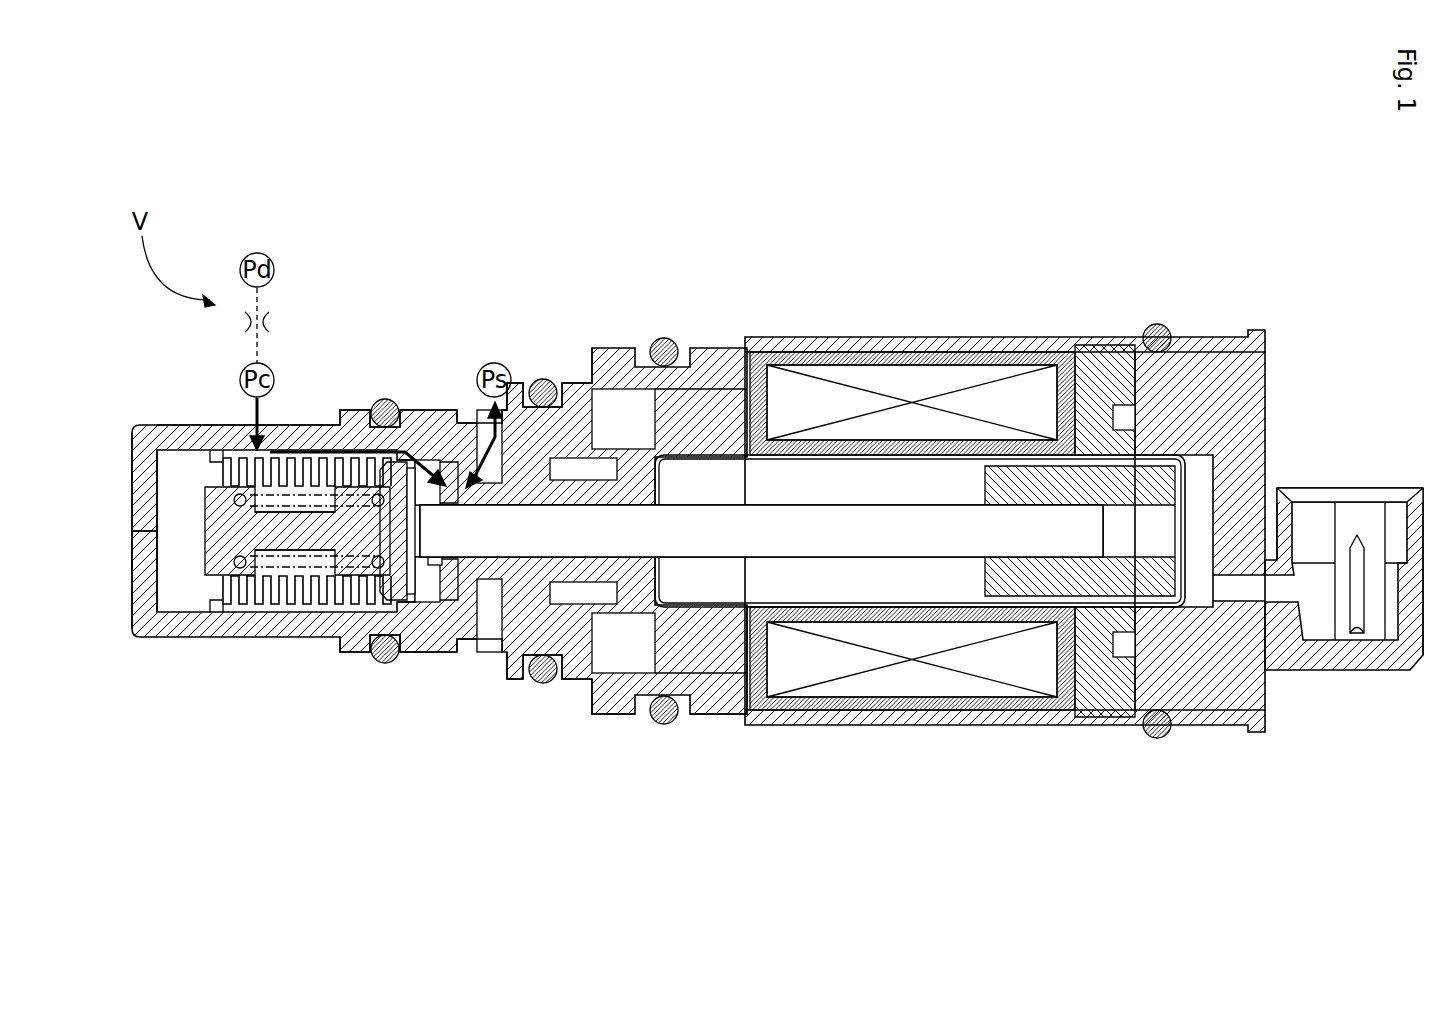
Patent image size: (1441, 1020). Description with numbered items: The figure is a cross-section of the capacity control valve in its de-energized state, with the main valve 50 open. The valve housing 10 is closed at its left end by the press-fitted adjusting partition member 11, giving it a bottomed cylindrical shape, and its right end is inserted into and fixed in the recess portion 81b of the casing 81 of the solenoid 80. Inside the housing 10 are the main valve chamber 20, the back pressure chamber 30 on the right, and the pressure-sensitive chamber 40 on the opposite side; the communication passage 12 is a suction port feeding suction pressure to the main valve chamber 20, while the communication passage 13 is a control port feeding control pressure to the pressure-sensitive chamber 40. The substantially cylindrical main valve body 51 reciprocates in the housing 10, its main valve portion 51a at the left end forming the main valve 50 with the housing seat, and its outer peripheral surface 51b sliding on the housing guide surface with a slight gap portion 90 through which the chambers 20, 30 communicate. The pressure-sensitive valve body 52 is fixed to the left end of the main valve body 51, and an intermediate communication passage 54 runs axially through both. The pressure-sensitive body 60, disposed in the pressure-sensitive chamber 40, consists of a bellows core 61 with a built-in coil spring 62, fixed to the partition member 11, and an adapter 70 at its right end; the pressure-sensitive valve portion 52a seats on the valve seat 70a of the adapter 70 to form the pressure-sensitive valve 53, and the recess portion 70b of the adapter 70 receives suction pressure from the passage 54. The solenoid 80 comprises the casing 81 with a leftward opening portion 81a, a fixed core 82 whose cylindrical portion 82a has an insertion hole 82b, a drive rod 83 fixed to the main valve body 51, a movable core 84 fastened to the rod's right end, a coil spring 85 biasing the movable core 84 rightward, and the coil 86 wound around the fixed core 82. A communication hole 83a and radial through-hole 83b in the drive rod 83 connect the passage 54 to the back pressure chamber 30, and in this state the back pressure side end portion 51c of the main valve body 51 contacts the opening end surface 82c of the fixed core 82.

The valve housing 10 is at (128, 385).
The adjusting partition member 11 is at (155, 530).
The communication passage 12 is at (485, 410).
The communication passage 13 is at (290, 425).
The main valve chamber 20 is at (462, 505).
The back pressure chamber 30 is at (583, 500).
The pressure-sensitive chamber 40 is at (232, 447).
The main valve 50 is at (490, 770).
The main valve body 51 is at (538, 685).
The main valve portion 51a is at (447, 640).
The outer peripheral surface 51b is at (518, 455).
The back pressure side end portion 51c is at (600, 680).
The pressure-sensitive valve body 52 is at (445, 462).
The pressure-sensitive valve portion 52a is at (383, 398).
The pressure-sensitive valve 53 is at (388, 262).
The intermediate communication passage 54 is at (432, 568).
The pressure-sensitive body 60 is at (228, 600).
The bellows core 61 is at (250, 575).
The coil spring 62 is at (300, 565).
The adapter 70 is at (382, 600).
The valve seat 70a is at (395, 462).
The recess portion 70b is at (410, 570).
The solenoid 80 is at (1286, 270).
The casing 81 is at (627, 716).
The opening portion 81a is at (690, 600).
The recess portion 81b is at (668, 606).
The fixed core 82 is at (1030, 500).
The cylindrical portion 82a is at (945, 455).
The insertion hole 82b is at (882, 512).
The opening end surface 82c is at (576, 590).
The drive rod 83 is at (1065, 478).
The communication hole 83a is at (670, 340).
The through-hole 83b is at (692, 500).
The movable core 84 is at (1192, 600).
The coil spring 85 is at (1160, 326).
The coil 86 is at (1110, 706).
The gap portion 90 is at (602, 262).